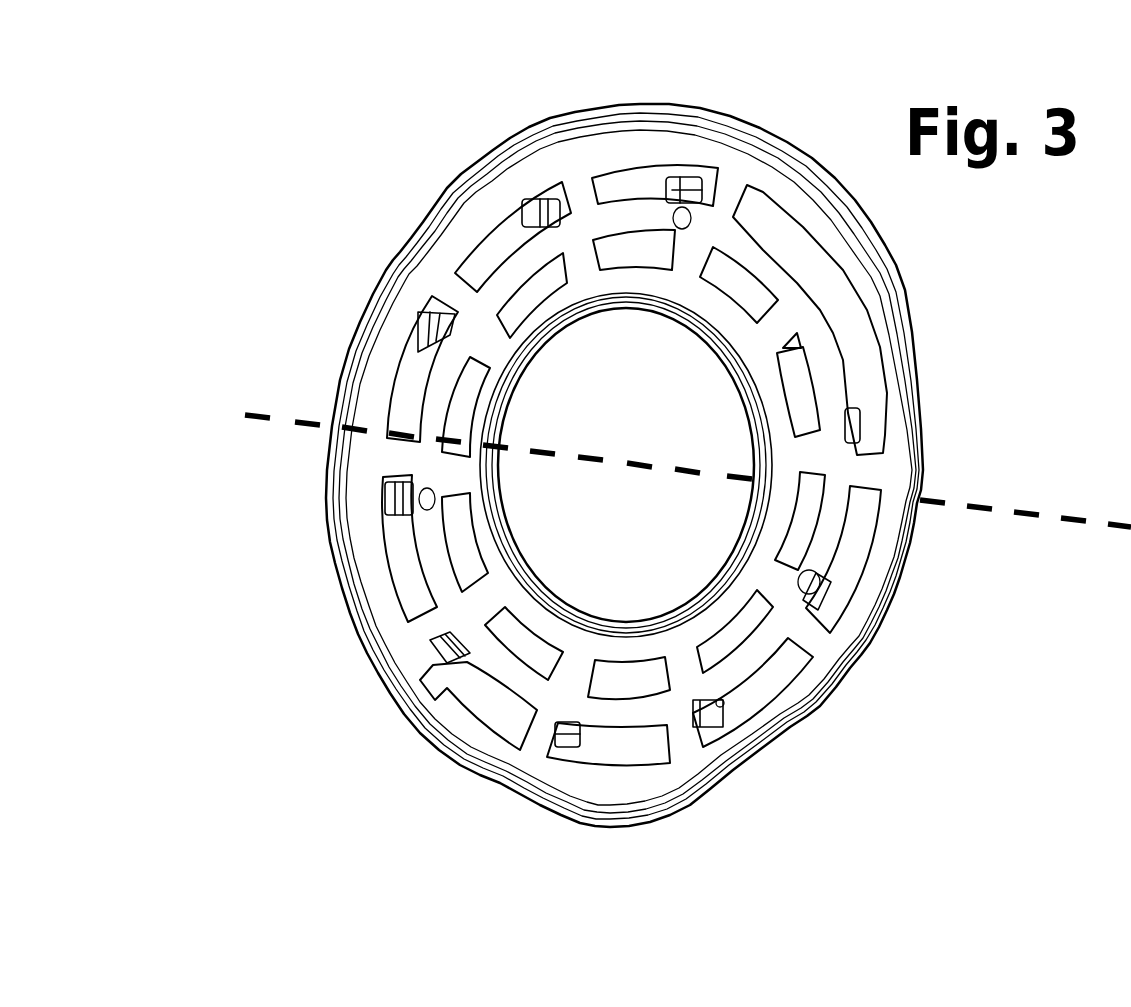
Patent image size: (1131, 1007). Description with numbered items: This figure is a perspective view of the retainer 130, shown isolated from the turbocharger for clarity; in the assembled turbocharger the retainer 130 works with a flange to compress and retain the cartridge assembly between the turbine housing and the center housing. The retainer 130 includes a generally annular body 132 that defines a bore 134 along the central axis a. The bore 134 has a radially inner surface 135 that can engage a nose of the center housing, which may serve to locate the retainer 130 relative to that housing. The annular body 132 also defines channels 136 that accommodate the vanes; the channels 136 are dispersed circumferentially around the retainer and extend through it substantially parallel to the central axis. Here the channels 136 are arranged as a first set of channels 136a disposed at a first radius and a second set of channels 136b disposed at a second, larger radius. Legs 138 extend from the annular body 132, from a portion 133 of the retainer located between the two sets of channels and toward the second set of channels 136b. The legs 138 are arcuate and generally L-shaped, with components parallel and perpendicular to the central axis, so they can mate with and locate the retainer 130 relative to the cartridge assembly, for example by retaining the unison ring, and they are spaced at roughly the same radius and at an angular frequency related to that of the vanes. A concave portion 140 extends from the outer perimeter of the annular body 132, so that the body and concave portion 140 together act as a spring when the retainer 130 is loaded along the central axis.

The retainer 130 is at (942, 626).
The annular body 132 is at (692, 683).
The portion 133 is at (503, 670).
The bore 134 is at (745, 363).
The radially inner surface 135 is at (500, 414).
The channels 136 is at (634, 465).
The first set of channels 136a is at (513, 310).
The second set of channels 136b is at (487, 250).
The legs 138 is at (677, 180).
The concave portion 140 is at (507, 140).